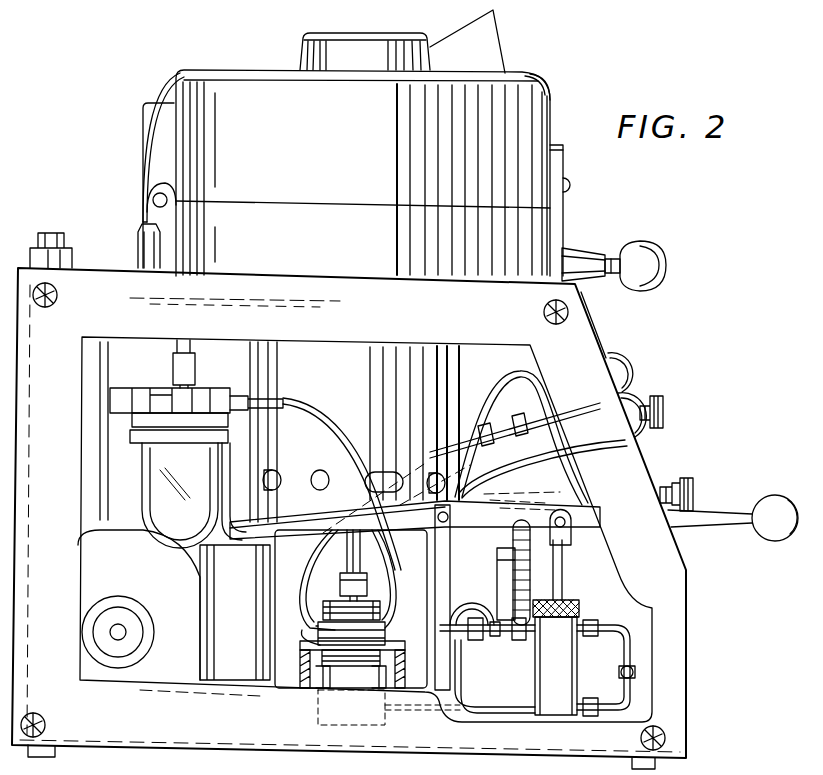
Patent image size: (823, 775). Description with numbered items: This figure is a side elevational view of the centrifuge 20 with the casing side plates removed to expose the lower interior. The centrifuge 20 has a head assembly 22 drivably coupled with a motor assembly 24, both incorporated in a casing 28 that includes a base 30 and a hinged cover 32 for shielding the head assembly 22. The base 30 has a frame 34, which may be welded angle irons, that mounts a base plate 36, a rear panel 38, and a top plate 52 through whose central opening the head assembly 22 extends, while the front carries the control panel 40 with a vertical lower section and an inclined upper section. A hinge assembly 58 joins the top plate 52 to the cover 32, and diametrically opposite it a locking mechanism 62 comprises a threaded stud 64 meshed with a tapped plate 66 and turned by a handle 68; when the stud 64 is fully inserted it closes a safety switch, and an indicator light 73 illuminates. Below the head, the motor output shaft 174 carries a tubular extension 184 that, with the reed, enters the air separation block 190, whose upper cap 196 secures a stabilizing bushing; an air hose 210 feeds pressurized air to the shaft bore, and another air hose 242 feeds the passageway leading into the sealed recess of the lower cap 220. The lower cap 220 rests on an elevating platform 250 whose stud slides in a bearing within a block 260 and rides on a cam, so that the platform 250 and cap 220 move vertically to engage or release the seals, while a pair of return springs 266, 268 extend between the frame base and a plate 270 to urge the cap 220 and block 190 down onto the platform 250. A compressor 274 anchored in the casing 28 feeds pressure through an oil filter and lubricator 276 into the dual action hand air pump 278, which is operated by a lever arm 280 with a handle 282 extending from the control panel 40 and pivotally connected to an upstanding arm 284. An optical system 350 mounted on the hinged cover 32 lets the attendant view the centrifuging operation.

The centrifuge 20 is at (520, 60).
The head assembly 22 is at (128, 98).
The motor assembly 24 is at (462, 398).
The casing 28 is at (590, 342).
The base 30 is at (700, 633).
The hinged cover 32 is at (553, 105).
The frame 34 is at (88, 586).
The base plate 36 is at (263, 742).
The rear panel 38 is at (58, 545).
The control panel 40 is at (648, 456).
The top plate 52 is at (103, 268).
The hinge assembly 58 is at (150, 198).
The locking mechanism 62 is at (580, 246).
The threaded stud 64 is at (613, 275).
The plate 66 is at (560, 199).
The handle 68 is at (666, 265).
The indicator light 73 is at (572, 184).
The motor output shaft 174 is at (362, 543).
The tubular extension 184 is at (342, 586).
The air separation block 190 is at (318, 630).
The upper cap 196 is at (330, 605).
The air hose 210 is at (322, 552).
The lower cap 220 is at (380, 642).
The air hose 242 is at (444, 556).
The elevating platform 250 is at (272, 640).
The block 260 is at (380, 680).
The return spring 266 is at (300, 664).
The return spring 268 is at (396, 664).
The plate 270 is at (318, 638).
The compressor 274 is at (160, 586).
The oil filter and lubricator 276 is at (190, 525).
The hand air pump 278 is at (568, 670).
The lever arm 280 is at (694, 528).
The handle 282 is at (773, 542).
The upstanding arm 284 is at (440, 598).
The optical system 350 is at (512, 40).